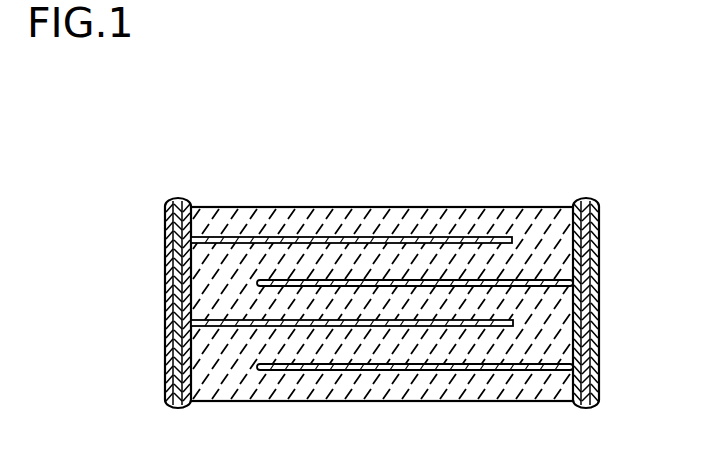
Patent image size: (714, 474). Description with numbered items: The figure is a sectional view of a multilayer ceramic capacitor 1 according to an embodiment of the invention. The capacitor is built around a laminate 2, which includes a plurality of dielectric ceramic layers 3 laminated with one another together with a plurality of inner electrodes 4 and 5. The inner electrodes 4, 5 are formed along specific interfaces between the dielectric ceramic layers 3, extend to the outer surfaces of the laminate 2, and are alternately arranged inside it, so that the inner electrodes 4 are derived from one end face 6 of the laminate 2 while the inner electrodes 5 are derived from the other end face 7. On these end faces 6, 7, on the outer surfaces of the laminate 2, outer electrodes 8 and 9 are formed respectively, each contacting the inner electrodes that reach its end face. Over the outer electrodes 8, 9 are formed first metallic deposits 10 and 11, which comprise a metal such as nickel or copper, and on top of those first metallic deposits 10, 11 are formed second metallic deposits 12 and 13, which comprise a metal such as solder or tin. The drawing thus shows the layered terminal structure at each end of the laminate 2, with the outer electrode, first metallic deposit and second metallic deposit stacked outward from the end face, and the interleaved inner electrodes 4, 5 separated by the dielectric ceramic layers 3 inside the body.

The multilayer ceramic capacitor 1 is at (152, 104).
The laminate 2 is at (361, 404).
The dielectric ceramic layers 3 is at (371, 305).
The inner electrodes 4 is at (268, 323).
The inner electrodes 5 is at (527, 366).
The end face 6 is at (144, 307).
The end face 7 is at (621, 303).
The outer electrode 8 is at (181, 250).
The outer electrode 9 is at (580, 233).
The first metallic deposit 10 is at (181, 338).
The first metallic deposit 11 is at (585, 343).
The second metallic deposit 12 is at (180, 386).
The second metallic deposit 13 is at (598, 389).